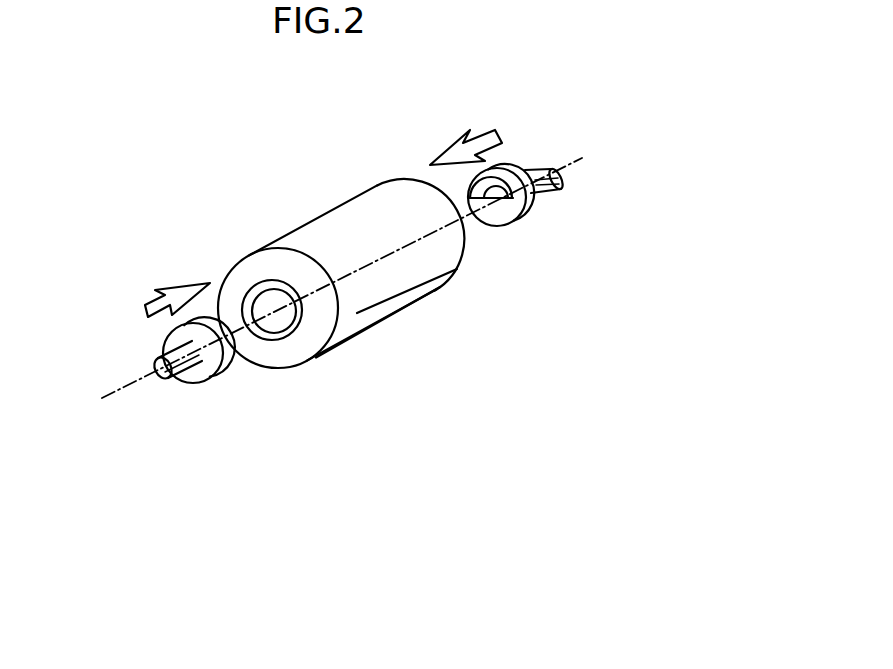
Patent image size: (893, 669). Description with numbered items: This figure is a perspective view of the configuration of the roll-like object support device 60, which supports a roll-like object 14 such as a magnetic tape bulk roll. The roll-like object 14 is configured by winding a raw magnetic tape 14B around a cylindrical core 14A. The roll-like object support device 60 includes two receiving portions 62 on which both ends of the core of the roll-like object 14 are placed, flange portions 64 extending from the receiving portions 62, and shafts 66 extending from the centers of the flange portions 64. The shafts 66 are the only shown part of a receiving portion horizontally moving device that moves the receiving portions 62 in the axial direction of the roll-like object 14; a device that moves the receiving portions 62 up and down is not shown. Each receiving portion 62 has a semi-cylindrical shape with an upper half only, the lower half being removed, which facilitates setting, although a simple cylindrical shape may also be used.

The roll-like object 14 is at (353, 269).
The cylindrical core 14A is at (285, 338).
The raw magnetic tape 14B is at (407, 300).
The roll-like object support device 60 is at (328, 240).
The receiving portion 62 is at (493, 198).
The flange portion 64 is at (527, 213).
The shaft 66 is at (545, 167).